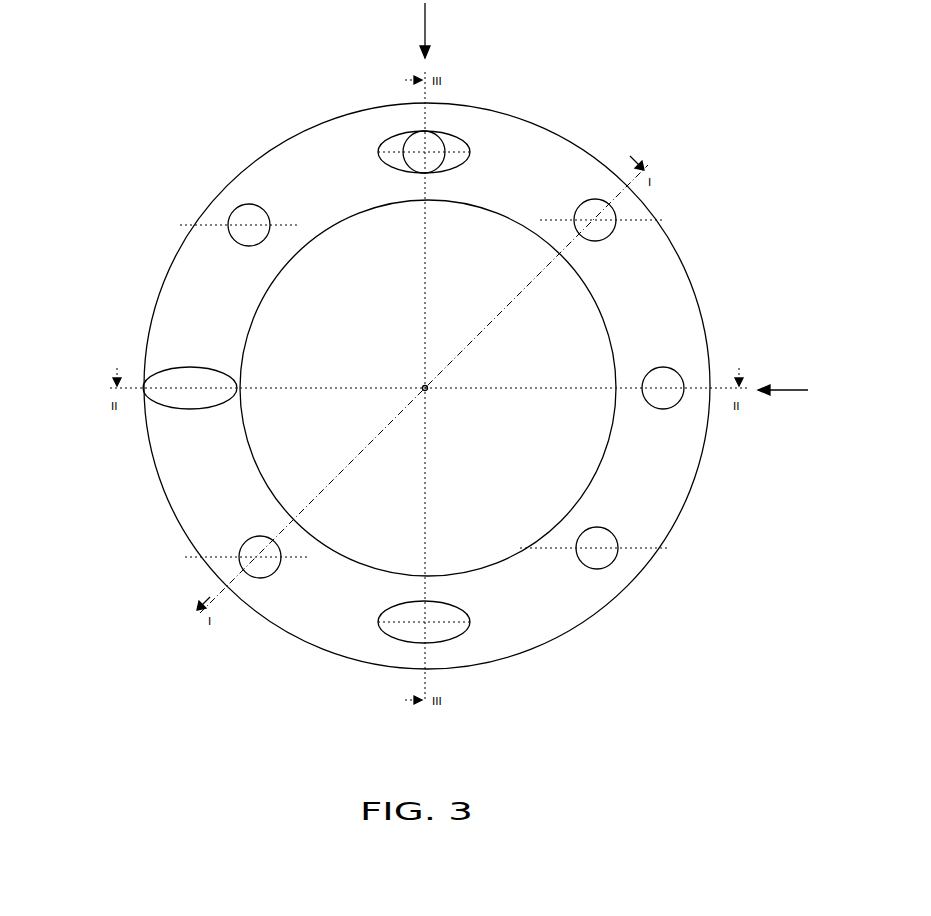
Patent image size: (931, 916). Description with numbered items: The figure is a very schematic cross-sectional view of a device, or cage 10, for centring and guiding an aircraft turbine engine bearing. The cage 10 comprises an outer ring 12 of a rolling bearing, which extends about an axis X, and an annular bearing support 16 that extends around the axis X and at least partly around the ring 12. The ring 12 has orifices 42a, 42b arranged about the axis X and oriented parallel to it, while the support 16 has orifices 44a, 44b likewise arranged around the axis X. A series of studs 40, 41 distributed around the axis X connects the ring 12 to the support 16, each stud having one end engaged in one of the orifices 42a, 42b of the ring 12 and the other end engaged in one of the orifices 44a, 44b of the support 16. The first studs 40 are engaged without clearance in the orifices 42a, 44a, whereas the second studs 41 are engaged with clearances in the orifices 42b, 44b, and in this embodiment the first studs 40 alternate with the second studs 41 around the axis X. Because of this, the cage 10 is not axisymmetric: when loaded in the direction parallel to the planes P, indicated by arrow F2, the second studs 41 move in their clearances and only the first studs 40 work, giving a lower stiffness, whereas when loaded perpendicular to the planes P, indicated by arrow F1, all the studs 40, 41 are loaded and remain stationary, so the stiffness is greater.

The cage 10 is at (411, 386).
The outer ring 12 is at (303, 247).
The annular bearing support 16 is at (670, 540).
The first stud 40 is at (260, 567).
The second stud 41 is at (430, 175).
The orifice of the ring 42a is at (600, 568).
The orifice of the ring 42b is at (470, 150).
The orifice of the support 44a is at (612, 572).
The orifice of the support 44b is at (392, 132).
The planes P is at (360, 152).
The axis X is at (427, 391).
The load direction arrow F1 is at (428, 33).
The load direction arrow F2 is at (785, 388).